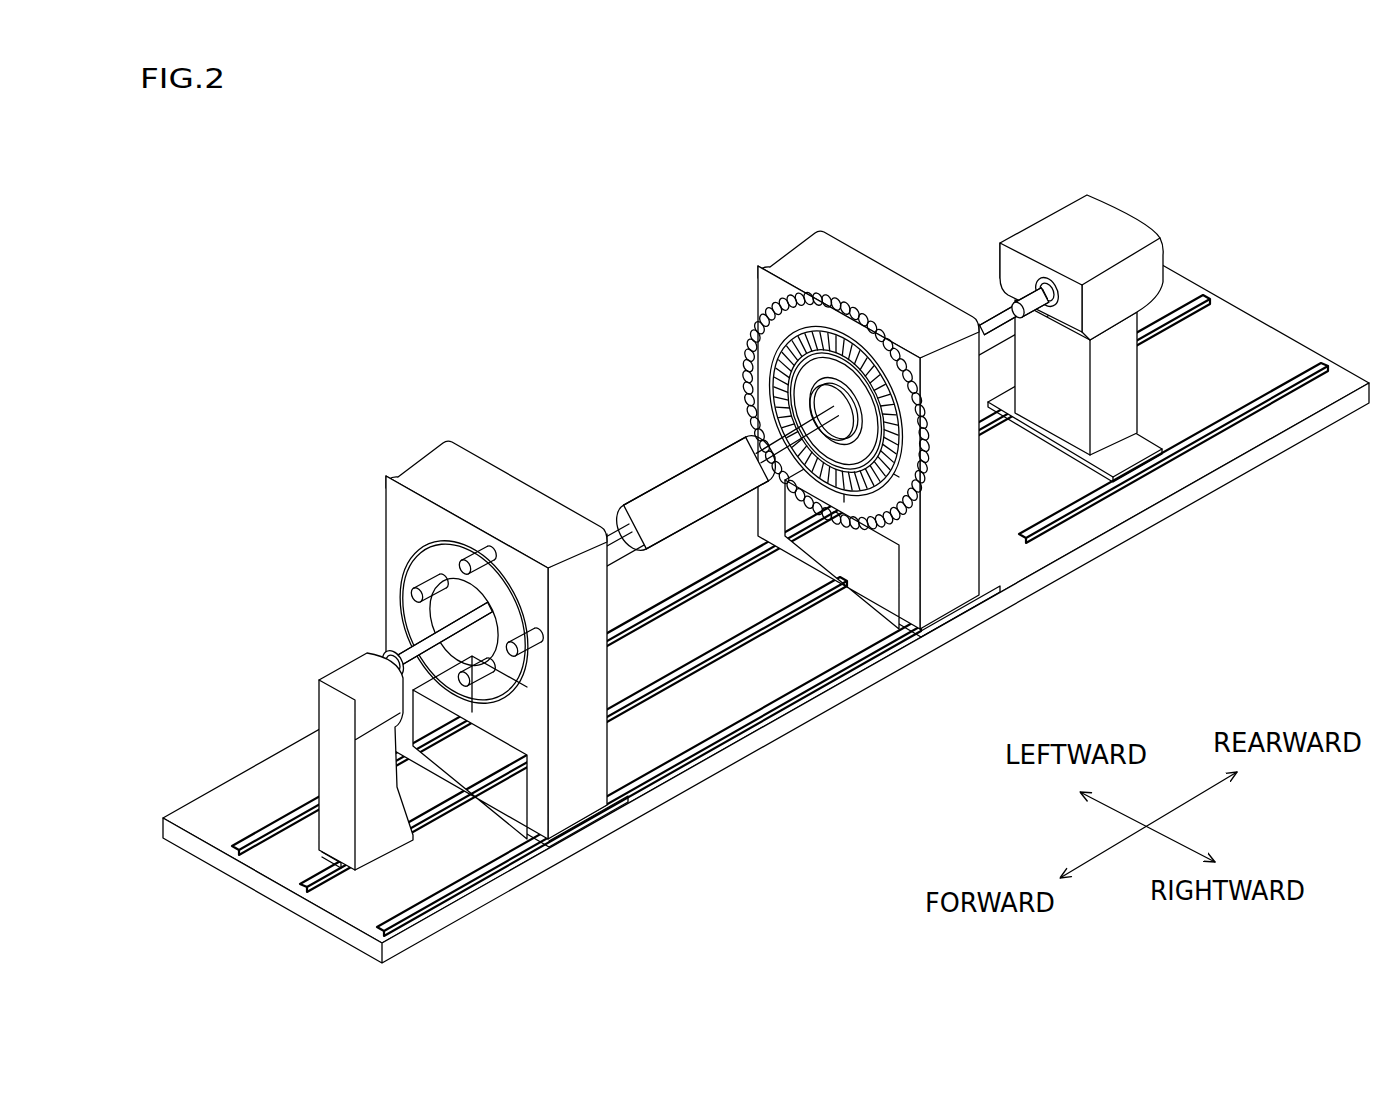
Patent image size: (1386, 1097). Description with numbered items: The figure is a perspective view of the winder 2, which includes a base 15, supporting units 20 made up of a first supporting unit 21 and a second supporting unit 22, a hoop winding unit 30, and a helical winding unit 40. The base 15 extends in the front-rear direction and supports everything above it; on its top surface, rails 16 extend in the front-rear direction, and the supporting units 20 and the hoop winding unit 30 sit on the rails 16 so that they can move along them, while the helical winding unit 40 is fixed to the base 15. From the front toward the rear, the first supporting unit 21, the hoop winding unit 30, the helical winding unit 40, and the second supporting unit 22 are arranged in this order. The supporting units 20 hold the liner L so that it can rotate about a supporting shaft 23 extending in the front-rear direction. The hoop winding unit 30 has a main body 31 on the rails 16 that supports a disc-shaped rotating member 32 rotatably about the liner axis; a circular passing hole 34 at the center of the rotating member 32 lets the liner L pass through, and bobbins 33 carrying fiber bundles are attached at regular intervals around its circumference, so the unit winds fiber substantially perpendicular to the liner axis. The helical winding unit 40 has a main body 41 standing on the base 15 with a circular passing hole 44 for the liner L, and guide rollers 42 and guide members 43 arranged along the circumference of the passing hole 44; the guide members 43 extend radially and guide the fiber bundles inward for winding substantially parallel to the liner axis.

The winder 2 is at (350, 237).
The base 15 is at (203, 765).
The rails 16 is at (1240, 428).
The supporting units 20 is at (1088, 309).
The first supporting unit 21 is at (325, 705).
The second supporting unit 22 is at (1103, 217).
The supporting shaft 23 is at (990, 305).
The hoop winding unit 30 is at (398, 428).
The main body 31 is at (513, 487).
The rotating member 32 is at (412, 570).
The bobbins 33 is at (478, 555).
The passing hole 34 is at (447, 612).
The helical winding unit 40 is at (775, 212).
The main body 41 is at (885, 275).
The guide rollers 42 is at (752, 335).
The guide members 43 is at (765, 358).
The passing hole 44 is at (790, 402).
The liner L is at (698, 468).